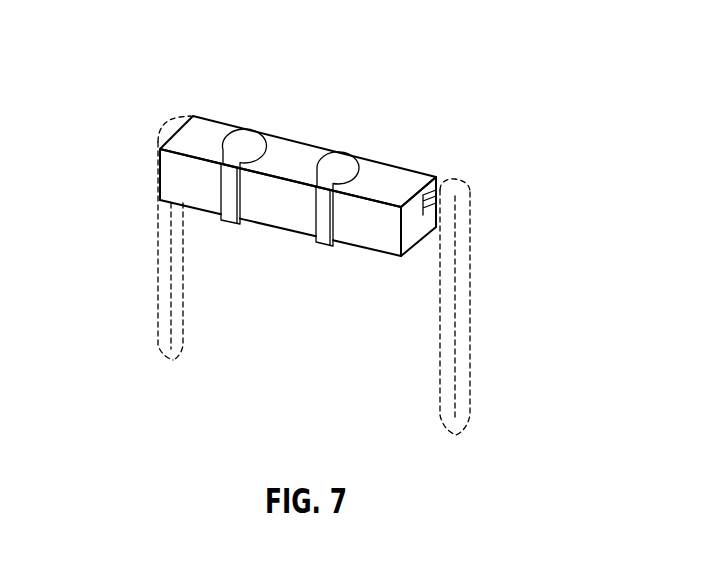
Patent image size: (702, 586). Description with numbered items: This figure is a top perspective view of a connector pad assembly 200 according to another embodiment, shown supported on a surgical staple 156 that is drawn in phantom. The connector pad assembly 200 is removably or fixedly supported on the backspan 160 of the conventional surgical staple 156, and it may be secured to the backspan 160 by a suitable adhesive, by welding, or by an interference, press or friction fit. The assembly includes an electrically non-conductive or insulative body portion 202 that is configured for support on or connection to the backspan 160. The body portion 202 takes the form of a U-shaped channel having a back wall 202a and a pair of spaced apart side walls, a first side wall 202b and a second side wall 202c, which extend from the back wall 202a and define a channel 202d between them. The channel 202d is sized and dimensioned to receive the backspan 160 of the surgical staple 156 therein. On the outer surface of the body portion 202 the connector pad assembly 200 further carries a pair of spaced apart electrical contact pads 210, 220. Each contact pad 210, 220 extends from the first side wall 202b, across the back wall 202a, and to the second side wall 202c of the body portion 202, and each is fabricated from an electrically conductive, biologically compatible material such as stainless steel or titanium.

The connector pad assembly 200 is at (414, 66).
The body portion 202 is at (151, 155).
The back wall 202a is at (148, 216).
The first side wall 202b is at (373, 167).
The second side wall 202c is at (397, 263).
The channel 202d is at (430, 210).
The first electrical contact pad 210 is at (228, 198).
The second electrical contact pad 220 is at (325, 222).
The surgical staple 156 is at (476, 157).
The backspan 160 is at (456, 187).